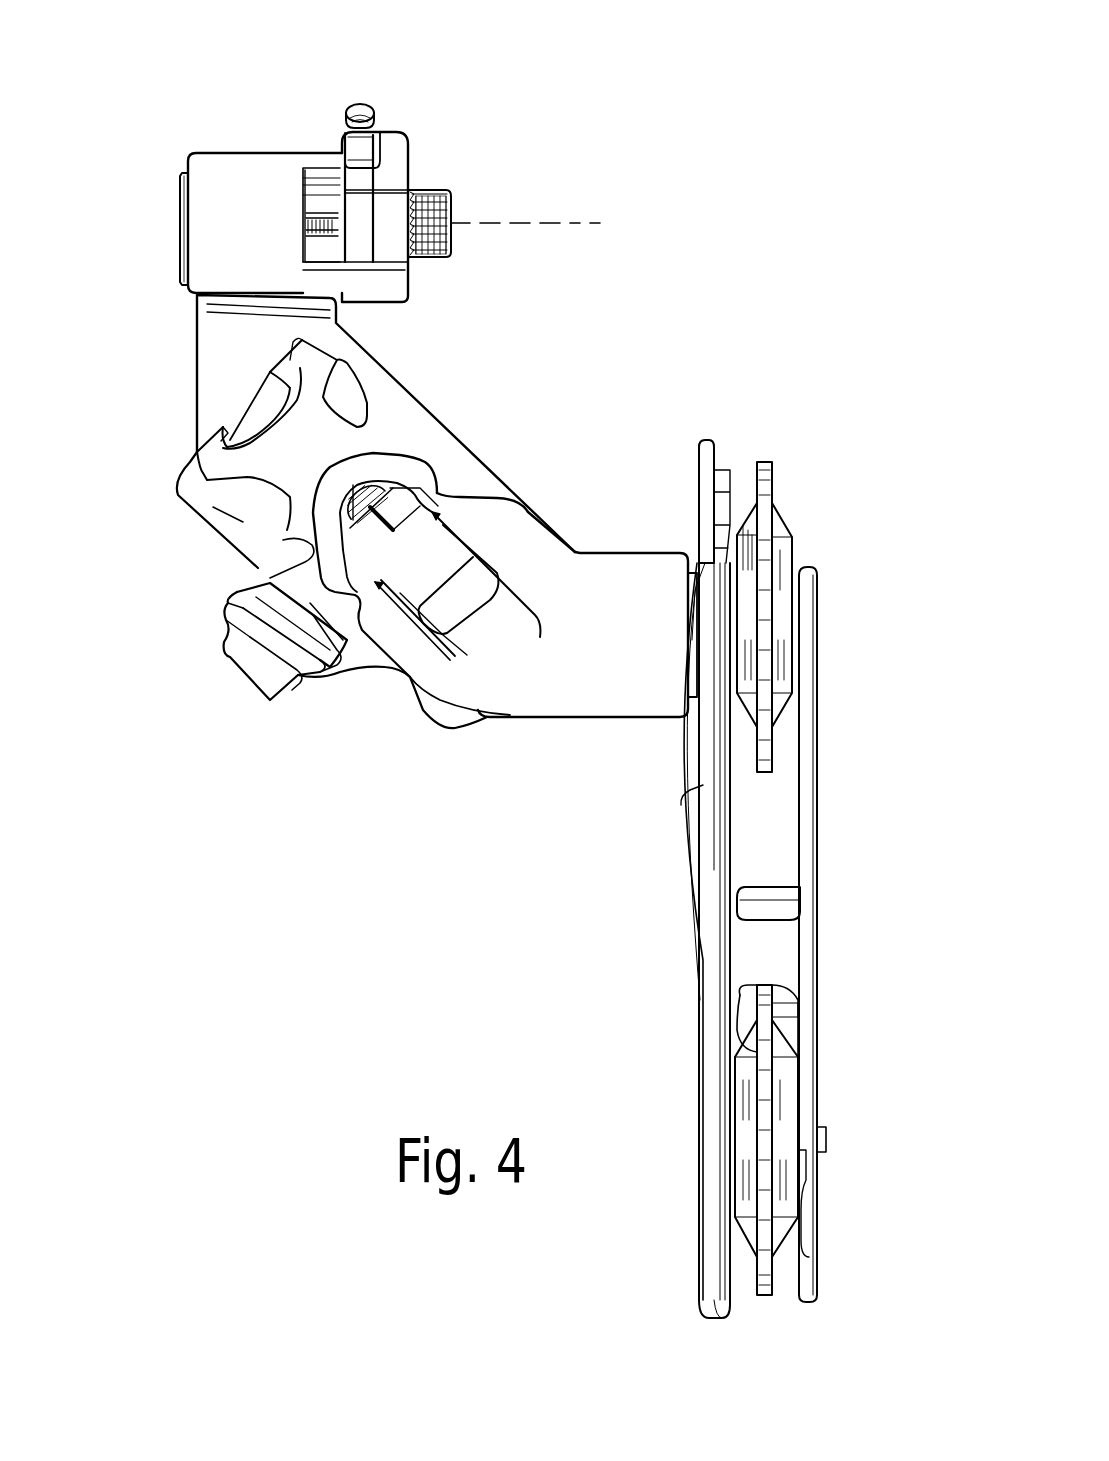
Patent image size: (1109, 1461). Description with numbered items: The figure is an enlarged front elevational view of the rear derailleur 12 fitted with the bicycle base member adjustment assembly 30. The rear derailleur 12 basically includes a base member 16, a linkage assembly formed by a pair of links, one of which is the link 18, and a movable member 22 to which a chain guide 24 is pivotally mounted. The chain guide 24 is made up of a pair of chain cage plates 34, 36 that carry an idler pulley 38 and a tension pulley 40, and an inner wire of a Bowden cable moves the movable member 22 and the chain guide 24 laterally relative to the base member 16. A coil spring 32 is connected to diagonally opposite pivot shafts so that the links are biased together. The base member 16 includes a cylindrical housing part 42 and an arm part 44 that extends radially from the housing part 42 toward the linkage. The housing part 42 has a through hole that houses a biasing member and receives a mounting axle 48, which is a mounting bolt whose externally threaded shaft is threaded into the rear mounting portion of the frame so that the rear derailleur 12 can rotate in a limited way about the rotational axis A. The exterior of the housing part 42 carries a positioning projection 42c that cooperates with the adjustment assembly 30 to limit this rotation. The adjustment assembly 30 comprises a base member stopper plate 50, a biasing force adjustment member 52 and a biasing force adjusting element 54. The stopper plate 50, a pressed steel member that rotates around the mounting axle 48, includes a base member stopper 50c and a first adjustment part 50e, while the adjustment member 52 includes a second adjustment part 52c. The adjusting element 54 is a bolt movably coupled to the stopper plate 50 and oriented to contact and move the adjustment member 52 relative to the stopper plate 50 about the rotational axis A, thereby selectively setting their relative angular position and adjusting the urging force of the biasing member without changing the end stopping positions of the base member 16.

The rear derailleur 12 is at (556, 408).
The base member 16 is at (203, 142).
The link 18 is at (285, 478).
The movable member 22 is at (578, 722).
The chain guide 24 is at (831, 688).
The bicycle base member adjustment assembly 30 is at (452, 84).
The coil spring 32 is at (390, 488).
The chain cage plate 34 is at (697, 795).
The chain cage plate 36 is at (803, 848).
The idler pulley 38 is at (780, 526).
The tension pulley 40 is at (747, 1085).
The cylindrical housing part 42 is at (275, 250).
The positioning projection 42c is at (326, 190).
The arm part 44 is at (190, 359).
The mounting axle 48 is at (180, 197).
The base member stopper plate 50 is at (422, 147).
The base member stopper 50c is at (350, 285).
The first adjustment part 50e is at (345, 130).
The biasing force adjustment member 52 is at (394, 233).
The second adjustment part 52c is at (362, 167).
The biasing force adjusting element 54 is at (367, 100).
The rotational axis A is at (563, 222).